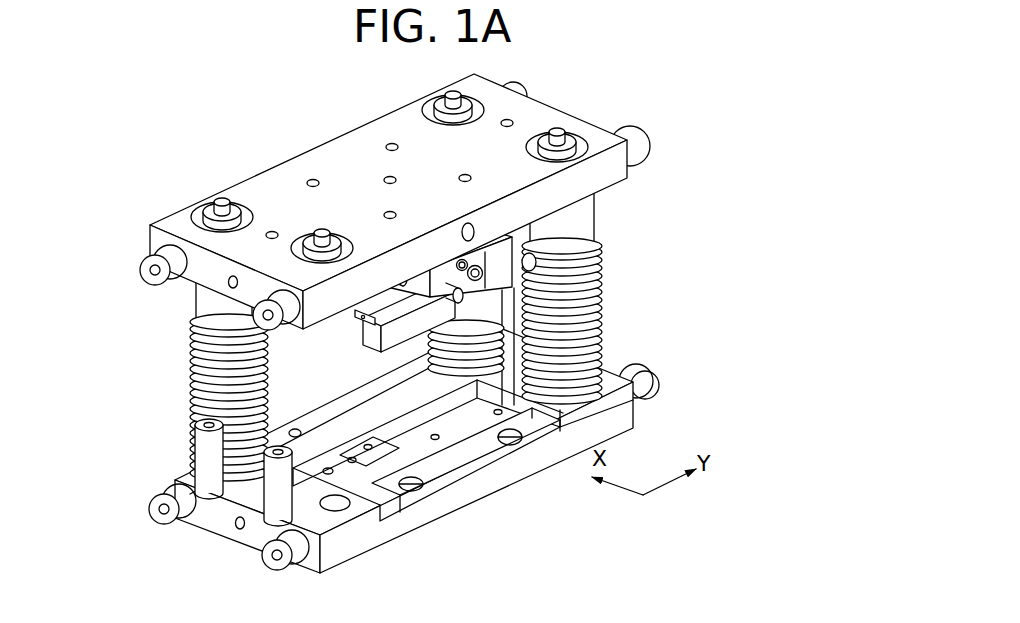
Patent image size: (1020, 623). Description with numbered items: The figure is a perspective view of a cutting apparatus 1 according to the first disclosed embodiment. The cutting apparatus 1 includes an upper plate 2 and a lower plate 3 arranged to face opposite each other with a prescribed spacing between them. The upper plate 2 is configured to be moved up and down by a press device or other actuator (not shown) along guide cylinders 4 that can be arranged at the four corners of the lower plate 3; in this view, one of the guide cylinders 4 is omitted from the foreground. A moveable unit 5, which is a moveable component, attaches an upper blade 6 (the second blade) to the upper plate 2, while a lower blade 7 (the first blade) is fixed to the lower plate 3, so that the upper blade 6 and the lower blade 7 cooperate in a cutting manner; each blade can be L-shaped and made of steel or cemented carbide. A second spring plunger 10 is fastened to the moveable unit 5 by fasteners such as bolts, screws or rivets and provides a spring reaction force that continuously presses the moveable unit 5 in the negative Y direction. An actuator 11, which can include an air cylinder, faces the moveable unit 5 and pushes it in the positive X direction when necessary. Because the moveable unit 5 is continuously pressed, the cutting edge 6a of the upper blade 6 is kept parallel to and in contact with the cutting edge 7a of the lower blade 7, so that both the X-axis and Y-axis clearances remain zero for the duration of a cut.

The cutting apparatus 1 is at (312, 122).
The upper plate 2 is at (369, 121).
The lower plate 3 is at (423, 522).
The guide cylinders 4 is at (437, 353).
The moveable unit 5 is at (402, 313).
The upper blade 6 is at (366, 346).
The cutting edge 6a is at (442, 357).
The lower blade 7 is at (395, 437).
The cutting edge 7a is at (452, 408).
The second spring plunger 10 is at (360, 322).
The actuator 11 is at (506, 252).